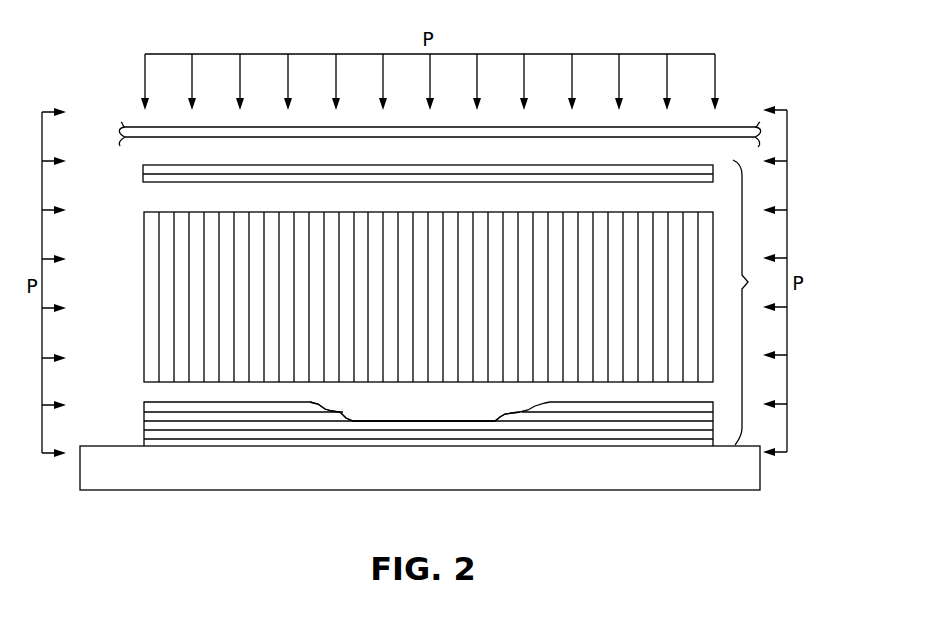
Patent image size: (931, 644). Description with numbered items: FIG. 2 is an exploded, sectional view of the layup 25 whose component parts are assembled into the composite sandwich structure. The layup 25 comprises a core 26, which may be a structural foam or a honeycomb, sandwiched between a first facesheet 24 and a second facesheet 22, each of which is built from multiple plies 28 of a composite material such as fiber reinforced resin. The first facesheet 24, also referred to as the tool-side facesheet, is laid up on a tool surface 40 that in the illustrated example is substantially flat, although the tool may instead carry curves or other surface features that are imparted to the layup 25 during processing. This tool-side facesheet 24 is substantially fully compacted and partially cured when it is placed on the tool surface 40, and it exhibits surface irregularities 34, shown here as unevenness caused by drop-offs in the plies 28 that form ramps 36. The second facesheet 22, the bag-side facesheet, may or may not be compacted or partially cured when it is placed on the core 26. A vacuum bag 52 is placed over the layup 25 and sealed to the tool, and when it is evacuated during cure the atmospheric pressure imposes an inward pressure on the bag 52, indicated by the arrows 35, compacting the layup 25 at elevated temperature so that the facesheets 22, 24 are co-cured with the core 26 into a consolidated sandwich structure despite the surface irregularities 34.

The second facesheet 22 is at (165, 176).
The first facesheet 24 is at (160, 420).
The layup 25 is at (753, 302).
The core 26 is at (178, 308).
The plies 28 is at (175, 178).
The surface irregularities 34 is at (466, 412).
The arrows 35 is at (667, 76).
The ramps 36 is at (348, 410).
The tool surface 40 is at (111, 460).
The vacuum bag 52 is at (134, 132).